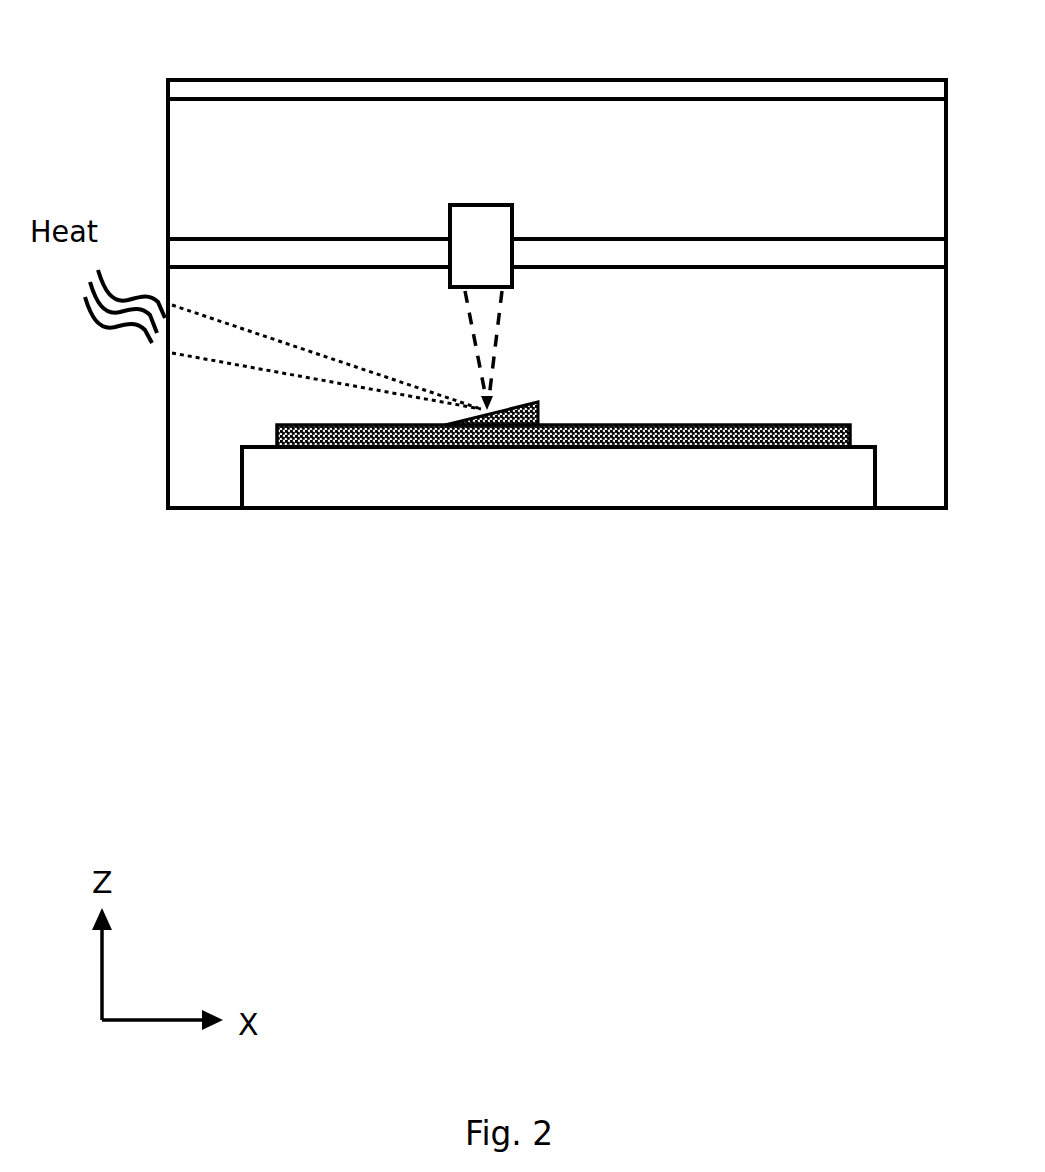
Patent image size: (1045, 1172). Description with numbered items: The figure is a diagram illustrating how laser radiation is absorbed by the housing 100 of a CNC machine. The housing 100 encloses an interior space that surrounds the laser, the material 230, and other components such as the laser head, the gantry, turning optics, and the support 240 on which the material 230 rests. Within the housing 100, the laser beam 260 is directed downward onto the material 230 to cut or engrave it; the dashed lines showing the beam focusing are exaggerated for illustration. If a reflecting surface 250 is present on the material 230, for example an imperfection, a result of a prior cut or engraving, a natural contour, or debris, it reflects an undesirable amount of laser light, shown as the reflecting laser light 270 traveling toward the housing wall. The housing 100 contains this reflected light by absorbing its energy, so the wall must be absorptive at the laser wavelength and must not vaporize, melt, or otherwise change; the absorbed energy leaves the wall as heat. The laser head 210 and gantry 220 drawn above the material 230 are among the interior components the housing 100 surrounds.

The housing 100 is at (270, 80).
The laser head 210 is at (447, 210).
The rail / gantry 220 is at (783, 239).
The material 230 is at (317, 447).
The support 240 is at (740, 508).
The reflecting surface 250 is at (518, 402).
The laser beam 260 is at (498, 320).
The reflecting laser light 270 is at (223, 325).